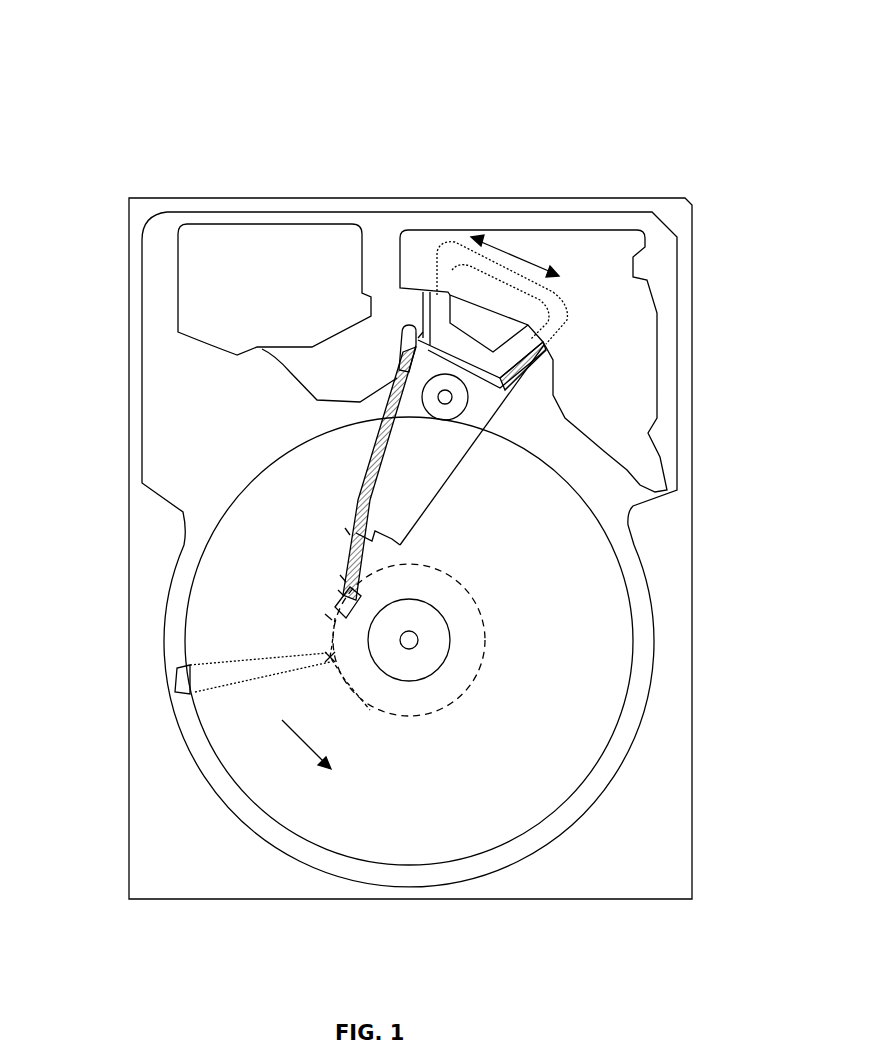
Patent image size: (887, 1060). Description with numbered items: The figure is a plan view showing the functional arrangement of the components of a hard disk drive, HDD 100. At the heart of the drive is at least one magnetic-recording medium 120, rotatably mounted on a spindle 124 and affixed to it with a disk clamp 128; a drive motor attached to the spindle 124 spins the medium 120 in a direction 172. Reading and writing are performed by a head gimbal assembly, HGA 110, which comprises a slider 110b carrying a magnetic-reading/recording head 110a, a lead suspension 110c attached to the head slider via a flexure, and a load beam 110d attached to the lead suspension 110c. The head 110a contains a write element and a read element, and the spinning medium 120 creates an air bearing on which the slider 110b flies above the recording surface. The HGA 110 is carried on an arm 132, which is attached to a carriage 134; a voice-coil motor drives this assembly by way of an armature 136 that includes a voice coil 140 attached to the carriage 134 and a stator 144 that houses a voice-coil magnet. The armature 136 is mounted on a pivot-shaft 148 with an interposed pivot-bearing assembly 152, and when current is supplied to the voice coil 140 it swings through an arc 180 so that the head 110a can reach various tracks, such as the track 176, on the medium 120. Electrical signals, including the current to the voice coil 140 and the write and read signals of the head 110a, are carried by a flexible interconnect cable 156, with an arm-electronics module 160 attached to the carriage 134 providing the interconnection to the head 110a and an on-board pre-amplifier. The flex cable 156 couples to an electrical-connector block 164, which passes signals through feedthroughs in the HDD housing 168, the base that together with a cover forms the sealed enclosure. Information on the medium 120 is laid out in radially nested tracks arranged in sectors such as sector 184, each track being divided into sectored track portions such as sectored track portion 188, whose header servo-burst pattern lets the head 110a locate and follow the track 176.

The hard disk drive 100 is at (66, 94).
The head gimbal assembly 110 is at (63, 472).
The magnetic-reading/recording head 110a is at (327, 617).
The slider 110b is at (340, 592).
The lead suspension 110c is at (343, 578).
The load beam 110d is at (347, 533).
The magnetic-recording medium 120 is at (570, 597).
The spindle 124 is at (417, 638).
The disk clamp 128 is at (432, 655).
The arm 132 is at (403, 498).
The carriage 134 is at (462, 425).
The armature 136 is at (423, 292).
The voice coil 140 is at (435, 330).
The stator 144 is at (628, 312).
The pivot-shaft 148 is at (453, 397).
The pivot-bearing assembly 152 is at (467, 413).
The flexible interconnect cable 156 is at (330, 400).
The arm-electronics module 160 is at (400, 368).
The electrical-connector block 164 is at (198, 290).
The HDD housing 168 is at (675, 210).
The direction of spin 172 is at (310, 750).
The track 176 is at (473, 603).
The arc 180 is at (515, 240).
The sector 184 is at (165, 668).
The sectored track portion 188 is at (327, 657).